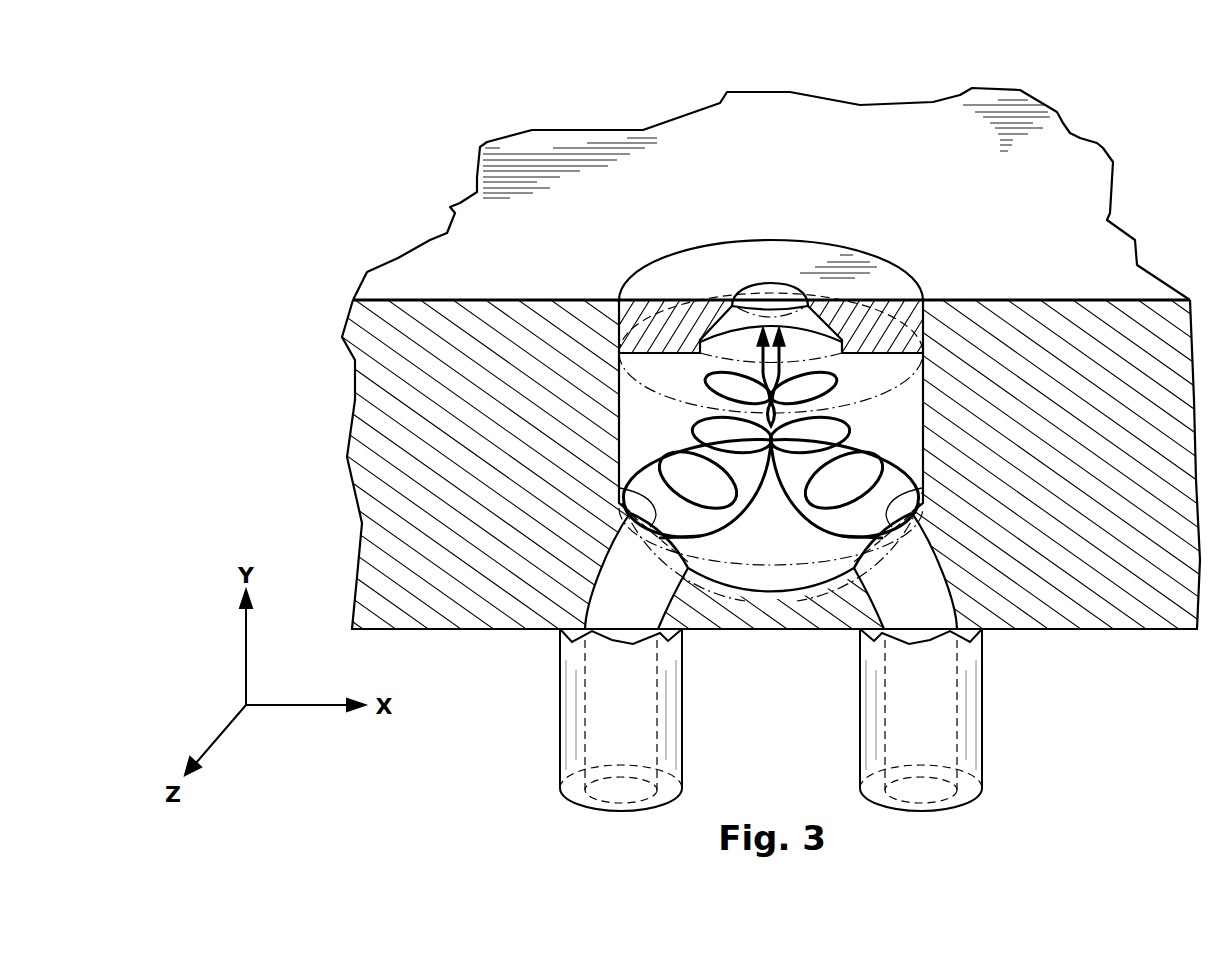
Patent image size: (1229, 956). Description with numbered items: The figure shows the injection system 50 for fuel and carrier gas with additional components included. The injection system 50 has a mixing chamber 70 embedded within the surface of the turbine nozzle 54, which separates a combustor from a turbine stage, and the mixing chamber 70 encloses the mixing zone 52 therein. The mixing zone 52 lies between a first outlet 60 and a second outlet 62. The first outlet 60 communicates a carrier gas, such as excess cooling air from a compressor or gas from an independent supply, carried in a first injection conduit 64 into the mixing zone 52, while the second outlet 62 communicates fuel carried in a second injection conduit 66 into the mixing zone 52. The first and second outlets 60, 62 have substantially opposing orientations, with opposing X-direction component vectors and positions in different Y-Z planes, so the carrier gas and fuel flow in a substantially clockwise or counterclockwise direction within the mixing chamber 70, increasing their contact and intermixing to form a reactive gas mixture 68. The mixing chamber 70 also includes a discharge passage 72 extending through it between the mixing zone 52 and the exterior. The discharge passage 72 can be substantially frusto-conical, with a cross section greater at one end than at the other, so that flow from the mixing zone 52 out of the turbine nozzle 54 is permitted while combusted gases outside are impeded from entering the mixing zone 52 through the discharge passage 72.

The injection system 50 is at (458, 98).
The mixing zone 52 is at (752, 552).
The turbine nozzle 54 is at (955, 116).
The first outlet 60 is at (632, 470).
The second outlet 62 is at (904, 508).
The first injection conduit 64 is at (612, 589).
The second injection conduit 66 is at (930, 589).
The reactive gas mixture 68 is at (857, 422).
The mixing chamber 70 is at (619, 410).
The discharge passage 72 is at (767, 296).